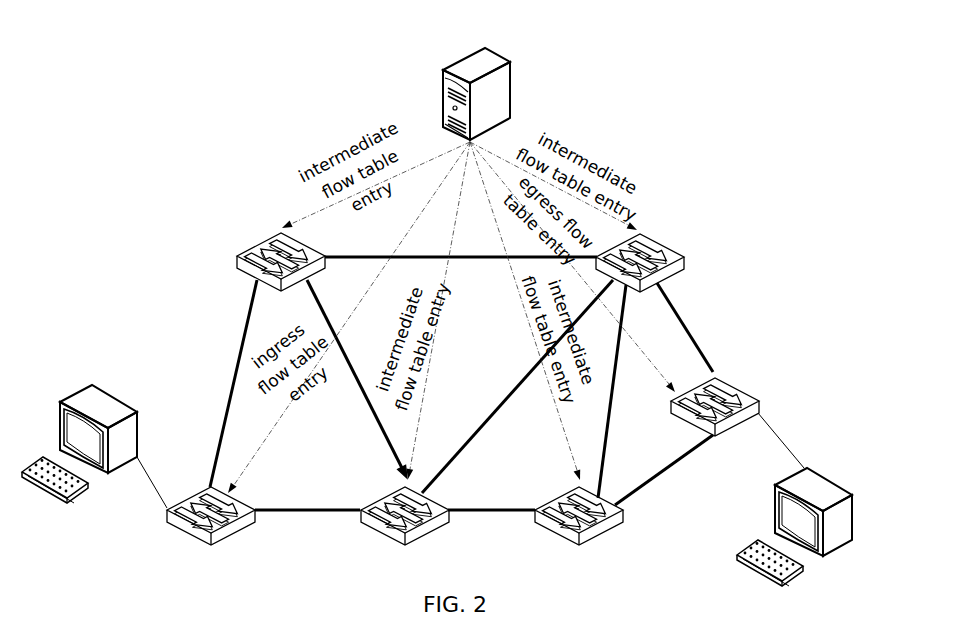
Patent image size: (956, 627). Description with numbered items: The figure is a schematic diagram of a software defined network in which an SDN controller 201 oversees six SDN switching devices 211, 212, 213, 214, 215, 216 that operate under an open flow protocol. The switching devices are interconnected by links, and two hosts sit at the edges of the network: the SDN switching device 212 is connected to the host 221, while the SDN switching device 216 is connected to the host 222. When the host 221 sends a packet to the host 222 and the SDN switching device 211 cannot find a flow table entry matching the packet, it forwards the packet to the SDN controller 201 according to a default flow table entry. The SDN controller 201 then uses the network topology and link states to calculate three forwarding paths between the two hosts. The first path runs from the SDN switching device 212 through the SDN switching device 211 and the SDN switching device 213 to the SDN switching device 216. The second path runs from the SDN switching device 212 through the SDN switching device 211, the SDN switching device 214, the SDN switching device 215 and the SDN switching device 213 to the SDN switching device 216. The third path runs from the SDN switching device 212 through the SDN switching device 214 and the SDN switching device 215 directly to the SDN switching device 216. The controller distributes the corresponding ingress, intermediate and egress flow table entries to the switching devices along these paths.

The SDN controller 201 is at (494, 50).
The SDN switching device 211 is at (311, 253).
The SDN switching device 212 is at (251, 507).
The SDN switching device 213 is at (682, 252).
The SDN switching device 214 is at (440, 507).
The SDN switching device 215 is at (607, 535).
The SDN switching device 216 is at (737, 382).
The host 221 is at (110, 390).
The host 222 is at (826, 477).